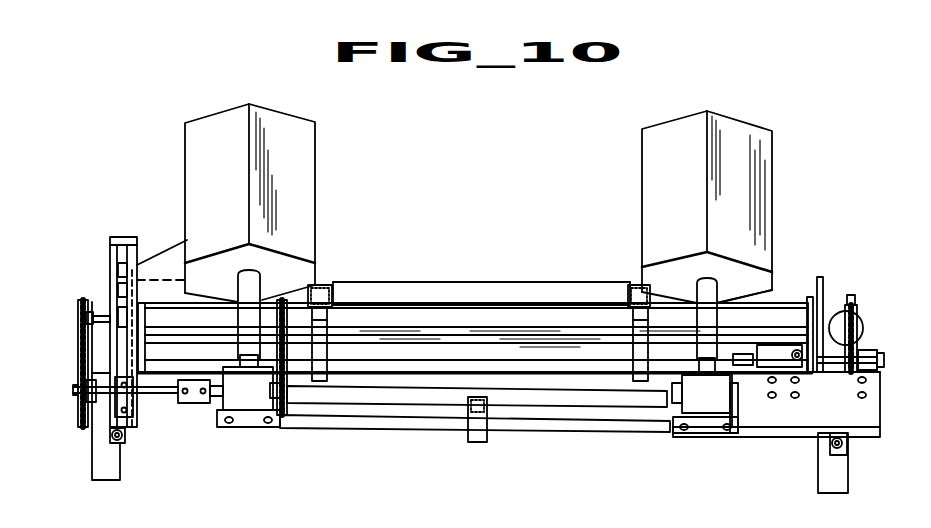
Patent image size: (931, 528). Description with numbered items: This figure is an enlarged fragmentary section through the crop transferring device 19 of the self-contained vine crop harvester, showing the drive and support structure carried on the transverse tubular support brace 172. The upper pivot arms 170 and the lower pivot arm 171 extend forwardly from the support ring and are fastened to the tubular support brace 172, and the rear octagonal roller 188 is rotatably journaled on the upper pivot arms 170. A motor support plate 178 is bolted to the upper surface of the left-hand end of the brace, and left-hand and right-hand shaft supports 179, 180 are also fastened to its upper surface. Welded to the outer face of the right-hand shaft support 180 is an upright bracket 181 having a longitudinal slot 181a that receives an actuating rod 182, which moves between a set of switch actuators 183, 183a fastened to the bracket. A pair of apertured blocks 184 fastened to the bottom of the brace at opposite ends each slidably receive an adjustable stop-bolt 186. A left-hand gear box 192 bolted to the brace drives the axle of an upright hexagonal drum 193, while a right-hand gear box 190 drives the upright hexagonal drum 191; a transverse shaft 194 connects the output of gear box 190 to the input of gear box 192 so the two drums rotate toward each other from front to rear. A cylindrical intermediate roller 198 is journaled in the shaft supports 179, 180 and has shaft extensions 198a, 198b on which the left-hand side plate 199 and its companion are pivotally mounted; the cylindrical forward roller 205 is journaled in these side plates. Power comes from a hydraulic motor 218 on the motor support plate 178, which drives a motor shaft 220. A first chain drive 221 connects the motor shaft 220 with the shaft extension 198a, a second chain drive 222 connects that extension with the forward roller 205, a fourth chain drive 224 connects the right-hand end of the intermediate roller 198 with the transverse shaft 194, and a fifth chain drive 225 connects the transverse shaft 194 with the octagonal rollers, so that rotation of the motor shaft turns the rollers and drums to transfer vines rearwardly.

The crop transferring device 19 is at (443, 283).
The upper pivot arms 170 is at (320, 285).
The lower pivot arm 171 is at (477, 424).
The tubular support brace 172 is at (403, 414).
The motor support plate 178 is at (808, 392).
The left-hand shaft support 179 is at (770, 303).
The right-hand shaft support 180 is at (183, 274).
The upright bracket 181 is at (132, 238).
The longitudinal slot 181a is at (112, 248).
The actuating rod 182 is at (150, 302).
The switch actuator 183 is at (182, 245).
The switch actuator 183a is at (118, 274).
The apertured blocks 184 is at (124, 443).
The adjustable stop-bolt 186 is at (124, 440).
The rear octagonal roller 188 is at (500, 308).
The right-hand gear box 190 is at (252, 400).
The upright hexagonal drum 191 is at (307, 157).
The left-hand gear box 192 is at (690, 403).
The upright hexagonal drum 193 is at (652, 150).
The transverse shaft 194 is at (537, 397).
The cylindrical intermediate roller 198 is at (228, 315).
The shaft extension 198a is at (873, 310).
The shaft extension 198b is at (72, 322).
The left-hand side plate 199 is at (819, 300).
The cylindrical forward roller 205 is at (177, 360).
The hydraulic motor 218 is at (779, 367).
The motor shaft 220 is at (830, 363).
The first chain drive 221 is at (870, 277).
The second chain drive 222 is at (840, 307).
The fourth chain drive 224 is at (83, 428).
The fifth chain drive 225 is at (289, 405).